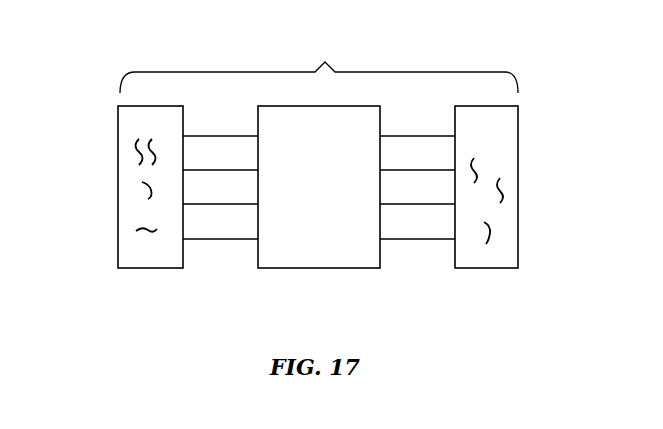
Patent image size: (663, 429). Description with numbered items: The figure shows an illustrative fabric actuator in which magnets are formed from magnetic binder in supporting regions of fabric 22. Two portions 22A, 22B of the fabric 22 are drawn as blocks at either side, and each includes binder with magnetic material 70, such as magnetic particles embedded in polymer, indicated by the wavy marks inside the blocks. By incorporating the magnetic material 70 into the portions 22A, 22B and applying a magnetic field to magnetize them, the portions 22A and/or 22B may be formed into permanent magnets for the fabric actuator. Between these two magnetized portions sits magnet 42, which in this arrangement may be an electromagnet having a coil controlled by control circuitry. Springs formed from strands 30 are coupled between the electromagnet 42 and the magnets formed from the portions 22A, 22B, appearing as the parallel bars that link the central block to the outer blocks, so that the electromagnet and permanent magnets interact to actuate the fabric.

The fabric 22 is at (319, 65).
The portion of fabric 22A is at (154, 268).
The portion of fabric 22B is at (492, 268).
The strands 30 is at (210, 205).
The magnet 42 is at (323, 268).
The magnetic material 70 is at (151, 195).